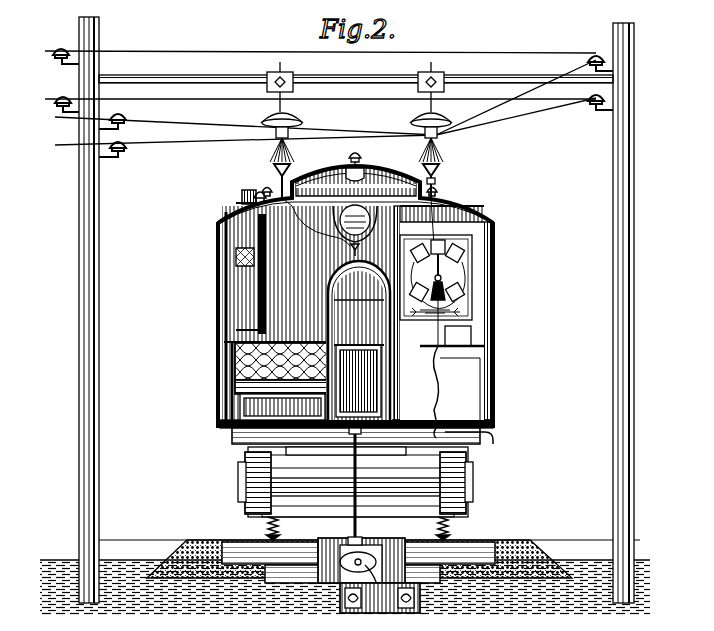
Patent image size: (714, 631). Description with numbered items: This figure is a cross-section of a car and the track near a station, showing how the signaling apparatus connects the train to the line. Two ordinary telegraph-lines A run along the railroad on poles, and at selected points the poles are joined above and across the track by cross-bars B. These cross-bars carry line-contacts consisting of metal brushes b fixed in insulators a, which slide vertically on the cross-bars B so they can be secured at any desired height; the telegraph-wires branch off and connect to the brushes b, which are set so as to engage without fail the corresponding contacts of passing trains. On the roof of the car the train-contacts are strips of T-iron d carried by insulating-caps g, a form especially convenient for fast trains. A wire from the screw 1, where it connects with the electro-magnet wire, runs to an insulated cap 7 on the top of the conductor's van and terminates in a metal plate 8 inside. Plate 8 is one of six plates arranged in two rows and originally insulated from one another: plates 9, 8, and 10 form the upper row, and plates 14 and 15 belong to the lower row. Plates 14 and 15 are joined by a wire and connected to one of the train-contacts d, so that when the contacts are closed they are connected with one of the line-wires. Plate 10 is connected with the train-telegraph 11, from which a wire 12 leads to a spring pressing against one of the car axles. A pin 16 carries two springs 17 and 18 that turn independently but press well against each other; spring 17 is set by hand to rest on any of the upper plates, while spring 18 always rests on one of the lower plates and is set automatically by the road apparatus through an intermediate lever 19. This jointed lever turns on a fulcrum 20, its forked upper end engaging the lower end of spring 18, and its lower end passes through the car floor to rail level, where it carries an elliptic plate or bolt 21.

The telegraph-lines A is at (329, 95).
The cross-bars B is at (356, 85).
The insulators a is at (356, 120).
The metal brushes b is at (360, 150).
The train-contacts d is at (272, 166).
The insulating-caps g is at (436, 180).
The screw 1 is at (355, 167).
The insulated cap 7 is at (358, 192).
The metal plate 8 is at (438, 247).
The plate 9 is at (419, 252).
The plate 10 is at (454, 252).
The train-telegraph 11 is at (458, 336).
The wire 12 is at (456, 383).
The plate 14 is at (418, 291).
The plate 15 is at (454, 291).
The pin 16 is at (434, 278).
The spring 17 is at (442, 278).
The spring 18 is at (355, 493).
The intermediate lever 19 is at (431, 323).
The fulcrum 20 is at (463, 436).
The elliptic plate or bolt 21 is at (348, 486).